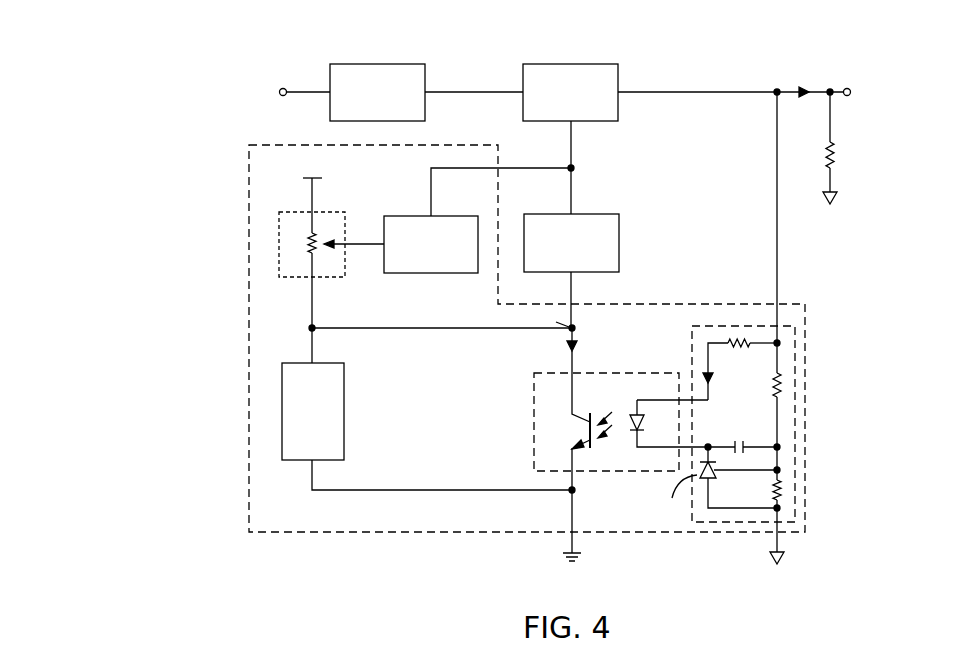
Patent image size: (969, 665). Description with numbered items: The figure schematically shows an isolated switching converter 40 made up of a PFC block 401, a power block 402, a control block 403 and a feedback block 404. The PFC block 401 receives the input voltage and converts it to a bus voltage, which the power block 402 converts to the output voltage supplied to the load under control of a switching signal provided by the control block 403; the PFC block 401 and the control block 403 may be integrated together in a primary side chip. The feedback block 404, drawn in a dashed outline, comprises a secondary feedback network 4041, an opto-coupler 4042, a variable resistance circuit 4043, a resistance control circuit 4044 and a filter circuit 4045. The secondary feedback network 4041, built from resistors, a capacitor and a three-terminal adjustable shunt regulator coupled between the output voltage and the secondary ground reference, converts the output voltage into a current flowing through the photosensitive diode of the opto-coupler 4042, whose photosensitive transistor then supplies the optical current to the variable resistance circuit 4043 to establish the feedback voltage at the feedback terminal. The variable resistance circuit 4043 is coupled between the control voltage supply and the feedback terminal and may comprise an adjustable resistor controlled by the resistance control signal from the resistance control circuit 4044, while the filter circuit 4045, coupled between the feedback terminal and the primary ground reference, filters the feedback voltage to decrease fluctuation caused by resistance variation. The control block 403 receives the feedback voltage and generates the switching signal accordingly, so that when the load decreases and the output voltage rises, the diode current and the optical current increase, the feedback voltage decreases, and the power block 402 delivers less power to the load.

The isolated switching converter 40 is at (474, 290).
The PFC block 401 is at (377, 92).
The power block 402 is at (570, 92).
The control block 403 is at (571, 243).
The feedback block 404 is at (793, 304).
The secondary feedback network 4041 is at (691, 357).
The opto-coupler 4042 is at (532, 408).
The variable resistance circuit 4043 is at (273, 248).
The resistance control circuit 4044 is at (407, 212).
The filter circuit 4045 is at (313, 411).